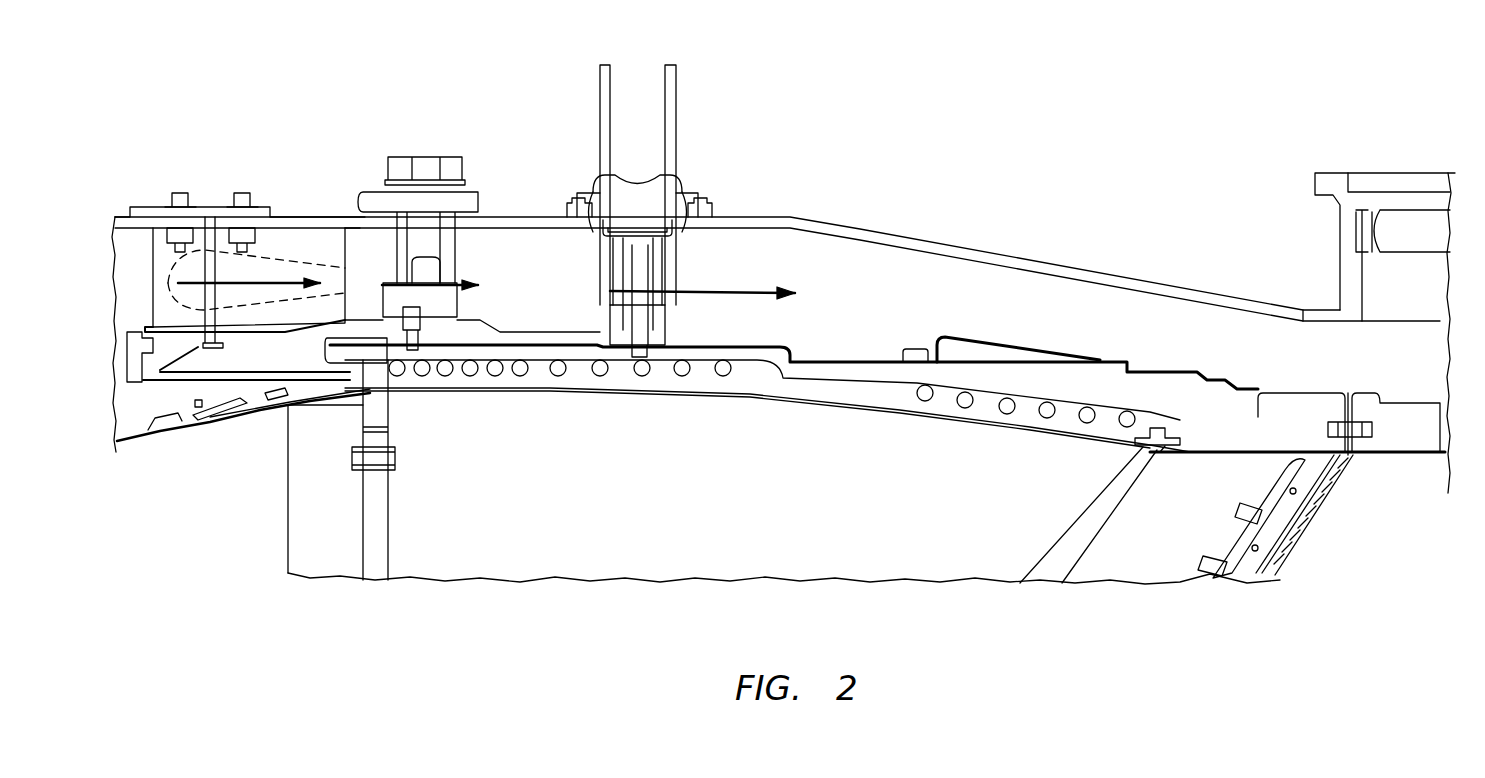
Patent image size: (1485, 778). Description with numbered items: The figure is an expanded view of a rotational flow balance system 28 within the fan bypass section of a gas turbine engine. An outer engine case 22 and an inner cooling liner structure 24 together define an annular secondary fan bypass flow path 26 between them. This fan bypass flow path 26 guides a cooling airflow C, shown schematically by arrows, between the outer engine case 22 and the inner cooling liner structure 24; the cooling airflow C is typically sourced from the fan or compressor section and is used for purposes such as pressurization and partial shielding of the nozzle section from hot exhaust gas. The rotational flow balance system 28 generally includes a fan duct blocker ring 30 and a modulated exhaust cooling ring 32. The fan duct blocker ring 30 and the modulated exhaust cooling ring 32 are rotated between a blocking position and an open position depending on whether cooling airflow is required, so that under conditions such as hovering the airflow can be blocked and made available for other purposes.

The outer engine case 22 is at (895, 240).
The inner cooling liner structure 24 is at (1018, 400).
The secondary fan bypass flow path 26 is at (556, 284).
The rotational flow balance system 28 is at (917, 86).
The fan duct blocker ring 30 is at (222, 260).
The modulated exhaust cooling ring 32 is at (908, 345).
The cooling airflow C is at (728, 288).